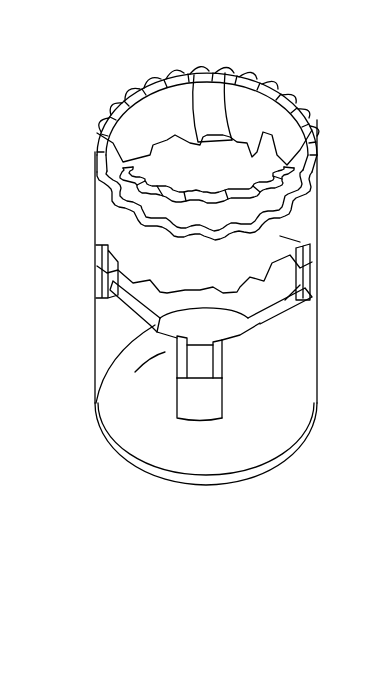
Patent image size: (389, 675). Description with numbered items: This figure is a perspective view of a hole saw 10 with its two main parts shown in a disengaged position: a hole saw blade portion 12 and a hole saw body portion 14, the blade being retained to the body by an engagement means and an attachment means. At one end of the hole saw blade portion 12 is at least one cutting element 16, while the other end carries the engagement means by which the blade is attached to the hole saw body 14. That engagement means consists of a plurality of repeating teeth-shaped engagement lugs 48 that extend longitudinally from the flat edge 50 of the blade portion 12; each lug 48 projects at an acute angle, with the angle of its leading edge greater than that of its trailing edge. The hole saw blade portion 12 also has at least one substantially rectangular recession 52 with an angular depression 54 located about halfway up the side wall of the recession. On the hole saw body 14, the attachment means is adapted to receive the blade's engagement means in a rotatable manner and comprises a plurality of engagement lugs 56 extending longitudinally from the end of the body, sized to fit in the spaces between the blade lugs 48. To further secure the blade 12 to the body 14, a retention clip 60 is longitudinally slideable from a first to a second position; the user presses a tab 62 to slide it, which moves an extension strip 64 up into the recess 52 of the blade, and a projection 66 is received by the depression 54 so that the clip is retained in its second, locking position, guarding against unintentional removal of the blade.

The hole saw 10 is at (300, 84).
The hole saw blade portion 12 is at (330, 194).
The hole saw body portion 14 is at (322, 359).
The cutting element 16 is at (123, 103).
The engagement lug 48 is at (193, 75).
The flat edge 50 is at (222, 73).
The rectangular recession 52 is at (298, 245).
The angular depression 54 is at (211, 310).
The engagement lug 56 is at (95, 381).
The retention clip 60 is at (223, 420).
The tab 62 is at (177, 420).
The extension strip 64 is at (226, 366).
The projection 66 is at (209, 413).